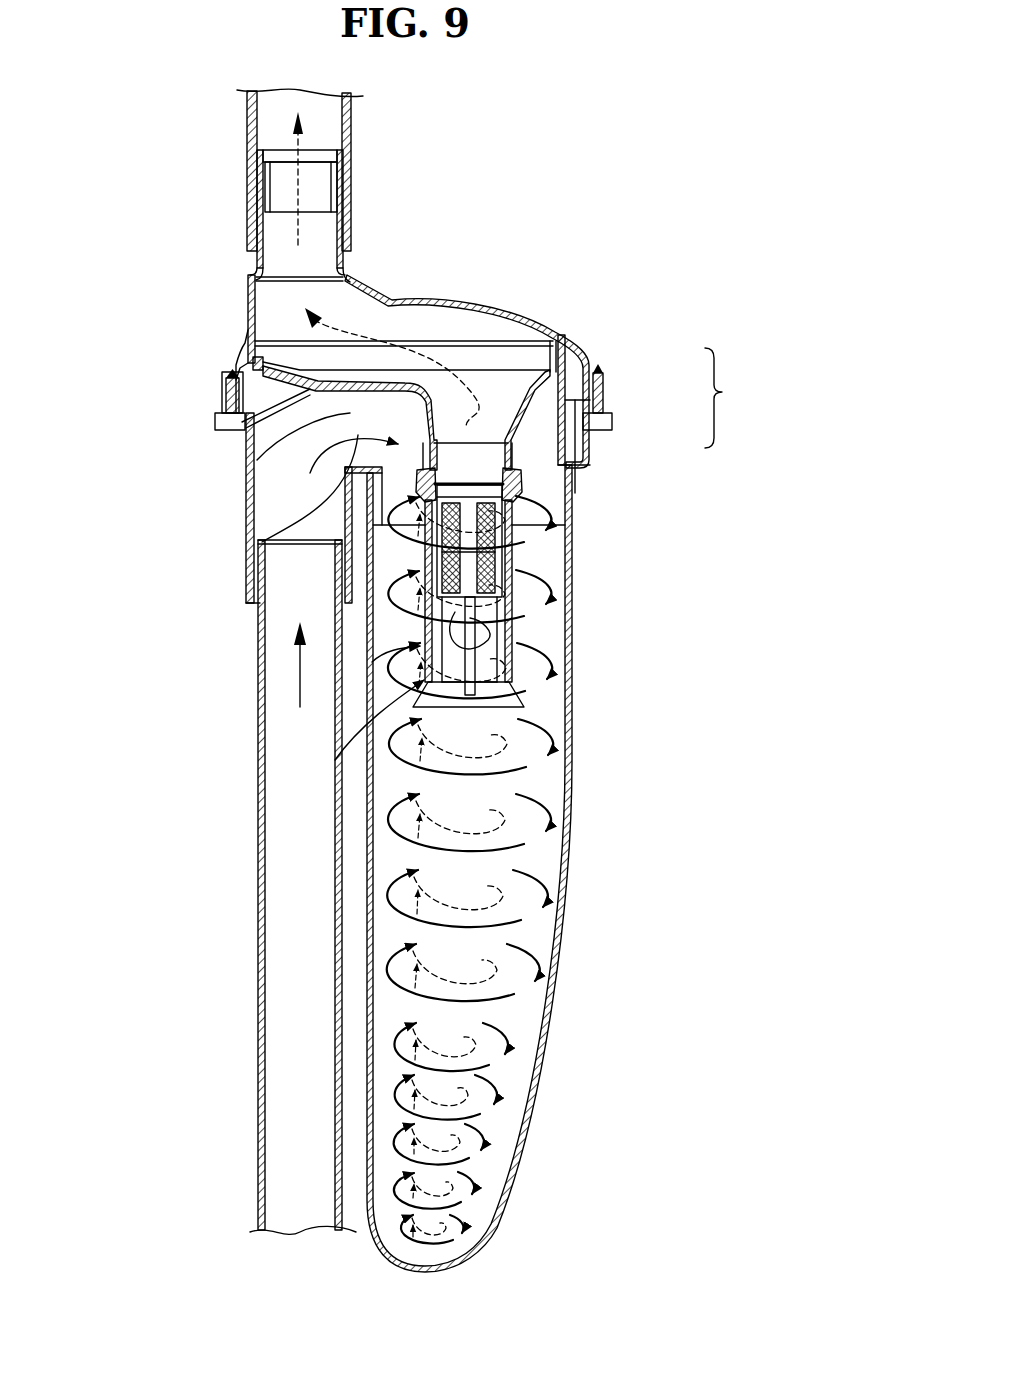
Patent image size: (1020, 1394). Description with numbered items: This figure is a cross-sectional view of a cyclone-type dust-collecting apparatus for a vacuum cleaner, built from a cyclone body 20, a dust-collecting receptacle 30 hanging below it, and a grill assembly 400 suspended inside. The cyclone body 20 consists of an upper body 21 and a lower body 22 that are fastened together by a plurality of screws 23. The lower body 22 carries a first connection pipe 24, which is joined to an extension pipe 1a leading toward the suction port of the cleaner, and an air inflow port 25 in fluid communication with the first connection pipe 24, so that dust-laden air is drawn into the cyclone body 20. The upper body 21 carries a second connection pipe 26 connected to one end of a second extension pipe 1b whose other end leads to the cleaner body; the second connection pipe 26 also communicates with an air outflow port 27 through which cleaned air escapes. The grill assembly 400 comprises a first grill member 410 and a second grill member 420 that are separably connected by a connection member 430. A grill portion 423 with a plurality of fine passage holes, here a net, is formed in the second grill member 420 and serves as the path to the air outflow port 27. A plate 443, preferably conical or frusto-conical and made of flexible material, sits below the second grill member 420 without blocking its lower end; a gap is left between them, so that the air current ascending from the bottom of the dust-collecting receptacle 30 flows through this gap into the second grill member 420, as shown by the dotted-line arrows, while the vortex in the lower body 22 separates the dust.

The extension pipe 1a is at (258, 1078).
The second extension pipe 1b is at (252, 122).
The cyclone body 20 is at (731, 398).
The upper body 21 is at (590, 356).
The lower body 22 is at (590, 443).
The screws 23 is at (222, 385).
The first connection pipe 24 is at (252, 498).
The air inflow port 25 is at (245, 453).
The second connection pipe 26 is at (257, 265).
The air outflow port 27 is at (432, 336).
The dust-collecting receptacle 30 is at (363, 823).
The grill assembly 400 is at (422, 630).
The first grill member 410 is at (262, 540).
The second grill member 420 is at (527, 625).
The grill portion 423 is at (528, 548).
The connection member 430 is at (566, 508).
The plate 443 is at (535, 704).